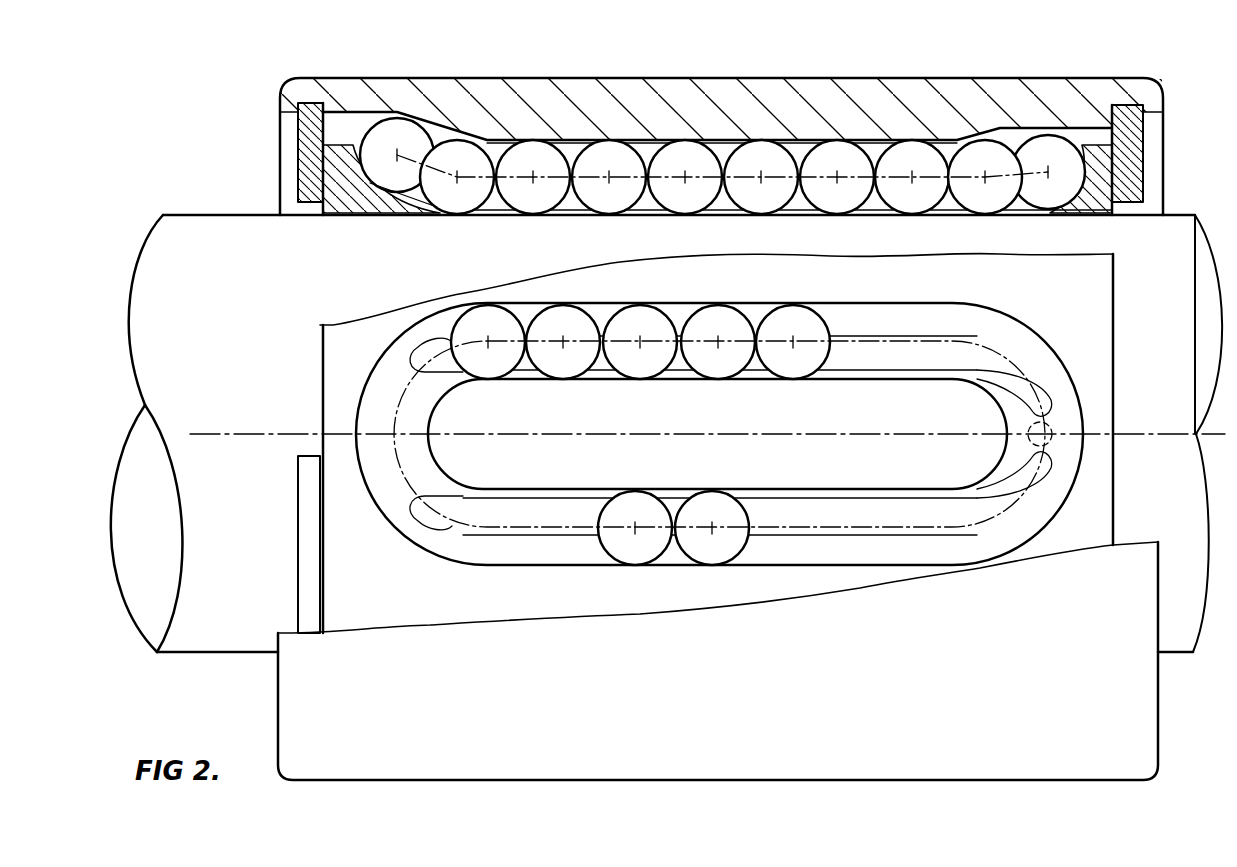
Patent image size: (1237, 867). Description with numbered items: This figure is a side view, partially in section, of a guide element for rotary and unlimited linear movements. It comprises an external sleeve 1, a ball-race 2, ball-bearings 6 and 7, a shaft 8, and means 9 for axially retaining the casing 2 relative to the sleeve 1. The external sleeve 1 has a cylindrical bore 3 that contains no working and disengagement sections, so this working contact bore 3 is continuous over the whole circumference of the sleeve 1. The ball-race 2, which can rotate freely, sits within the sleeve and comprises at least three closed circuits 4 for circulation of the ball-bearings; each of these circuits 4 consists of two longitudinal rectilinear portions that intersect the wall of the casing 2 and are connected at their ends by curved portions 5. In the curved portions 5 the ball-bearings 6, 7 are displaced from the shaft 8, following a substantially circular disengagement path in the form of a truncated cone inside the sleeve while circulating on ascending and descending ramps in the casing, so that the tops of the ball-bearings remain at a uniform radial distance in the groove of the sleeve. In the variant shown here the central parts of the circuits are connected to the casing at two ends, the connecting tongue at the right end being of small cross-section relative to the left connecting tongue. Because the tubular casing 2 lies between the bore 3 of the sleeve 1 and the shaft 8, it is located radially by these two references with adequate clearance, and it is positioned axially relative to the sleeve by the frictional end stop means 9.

The external sleeve 1 is at (345, 92).
The ball-race 2 is at (345, 195).
The cylindrical bore 3 is at (876, 137).
The closed circuits 4 is at (643, 147).
The curved portions 5 is at (398, 363).
The ball-bearings 6 is at (468, 160).
The ball-bearings 7 is at (660, 515).
The shaft 8 is at (1182, 488).
The axial retaining means 9 is at (1145, 150).